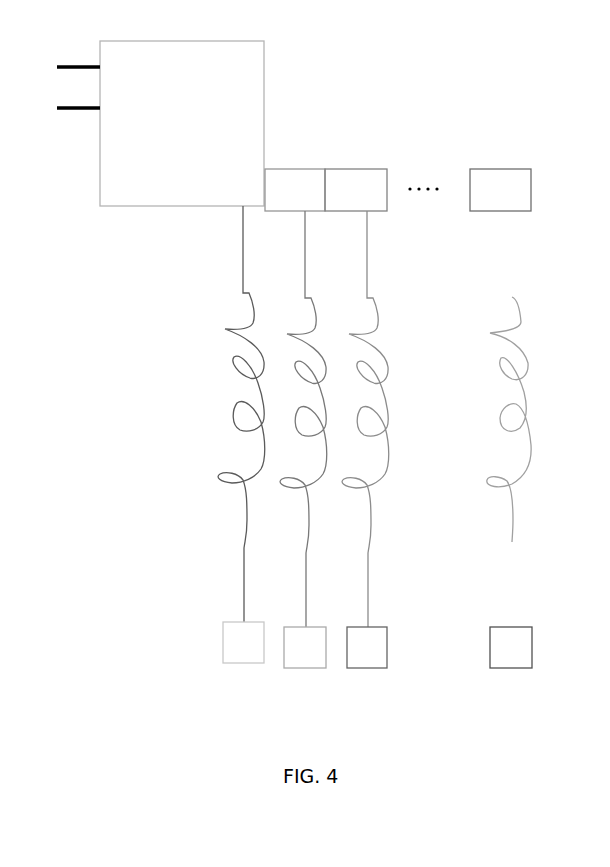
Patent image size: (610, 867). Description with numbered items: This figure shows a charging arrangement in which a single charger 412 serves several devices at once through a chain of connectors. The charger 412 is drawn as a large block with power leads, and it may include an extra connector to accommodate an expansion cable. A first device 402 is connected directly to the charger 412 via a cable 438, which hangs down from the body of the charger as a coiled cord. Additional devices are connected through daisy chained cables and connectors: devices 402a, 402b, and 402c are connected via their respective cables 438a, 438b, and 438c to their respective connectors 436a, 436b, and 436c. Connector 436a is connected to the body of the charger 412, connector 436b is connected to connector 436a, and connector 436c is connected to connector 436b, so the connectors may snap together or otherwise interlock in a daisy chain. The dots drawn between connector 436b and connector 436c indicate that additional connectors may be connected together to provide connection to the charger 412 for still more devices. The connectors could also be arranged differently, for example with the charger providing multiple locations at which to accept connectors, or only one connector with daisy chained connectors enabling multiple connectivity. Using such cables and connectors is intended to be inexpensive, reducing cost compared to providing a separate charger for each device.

The charger 412 is at (167, 205).
The connector 436a is at (295, 168).
The connector 436b is at (365, 168).
The connector 436c is at (487, 172).
The cable 438 is at (244, 569).
The cable 438a is at (303, 598).
The cable 438b is at (368, 508).
The cable 438c is at (510, 575).
The device 402 is at (228, 663).
The device 402a is at (308, 671).
The device 402b is at (365, 672).
The device 402c is at (505, 670).